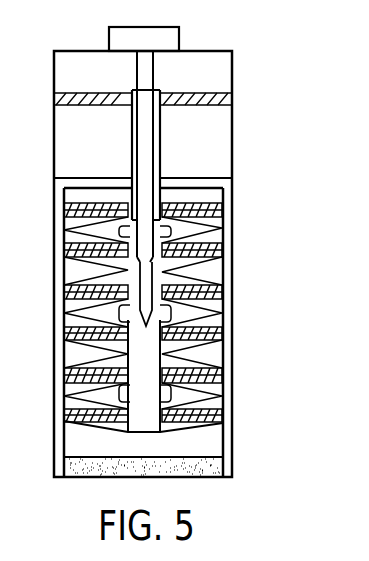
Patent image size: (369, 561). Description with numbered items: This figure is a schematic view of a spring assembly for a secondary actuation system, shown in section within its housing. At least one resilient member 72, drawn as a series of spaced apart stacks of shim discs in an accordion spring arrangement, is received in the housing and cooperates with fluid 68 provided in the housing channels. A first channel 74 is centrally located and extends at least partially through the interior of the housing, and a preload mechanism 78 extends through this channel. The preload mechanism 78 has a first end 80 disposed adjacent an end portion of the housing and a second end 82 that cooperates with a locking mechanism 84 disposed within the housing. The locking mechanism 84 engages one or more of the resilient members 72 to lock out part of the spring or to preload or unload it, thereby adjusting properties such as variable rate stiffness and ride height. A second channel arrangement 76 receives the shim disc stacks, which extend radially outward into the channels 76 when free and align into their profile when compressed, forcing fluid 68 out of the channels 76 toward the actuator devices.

The fluid 68 is at (72, 237).
The resilient member 72 is at (233, 295).
The first channel 74 is at (145, 127).
The second channel arrangement 76 is at (195, 362).
The preload mechanism 78 is at (150, 82).
The first end 80 is at (168, 38).
The second end 82 is at (160, 238).
The locking mechanism 84 is at (122, 299).